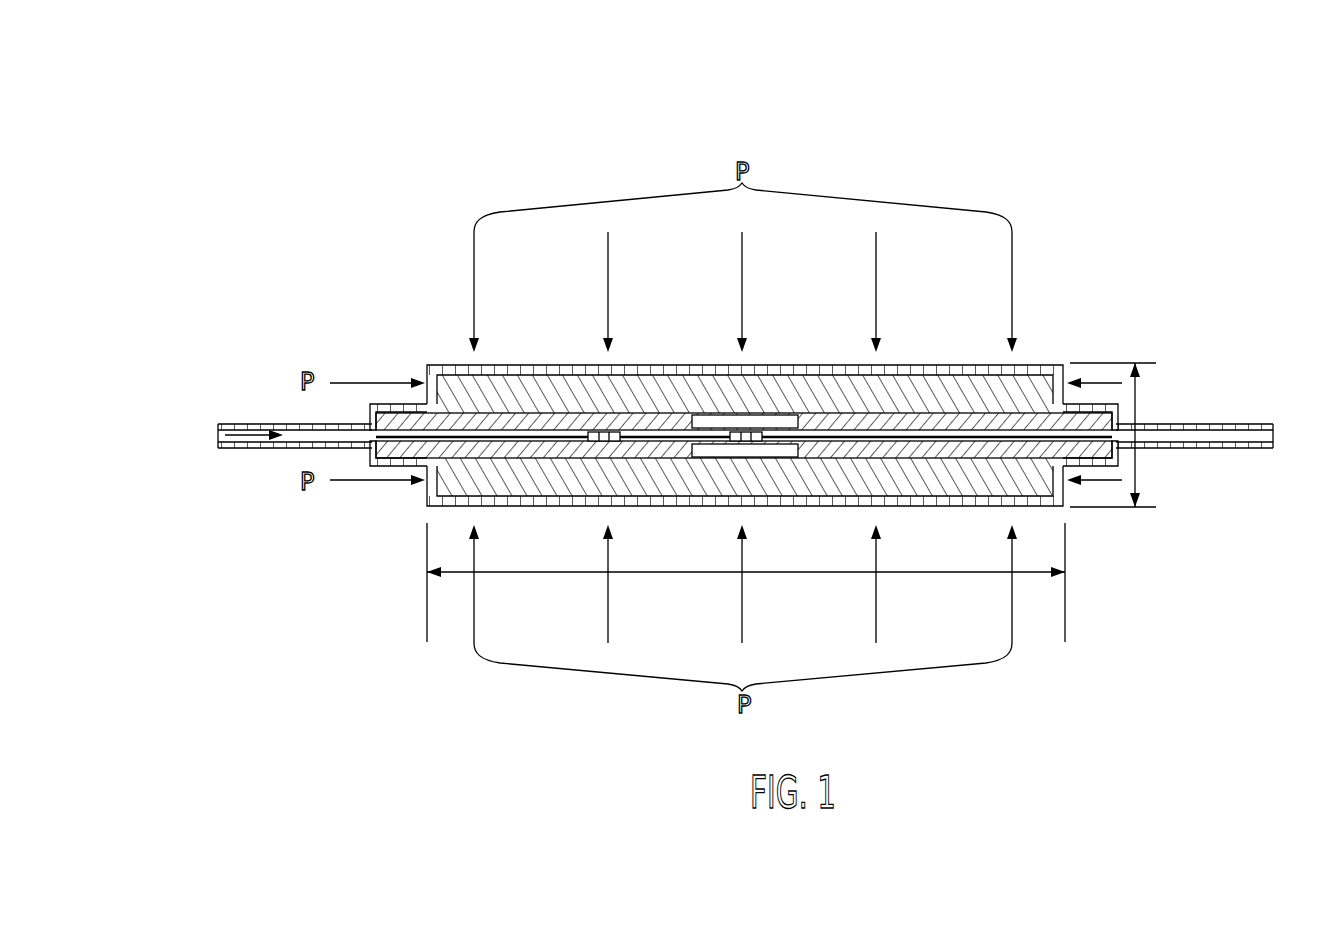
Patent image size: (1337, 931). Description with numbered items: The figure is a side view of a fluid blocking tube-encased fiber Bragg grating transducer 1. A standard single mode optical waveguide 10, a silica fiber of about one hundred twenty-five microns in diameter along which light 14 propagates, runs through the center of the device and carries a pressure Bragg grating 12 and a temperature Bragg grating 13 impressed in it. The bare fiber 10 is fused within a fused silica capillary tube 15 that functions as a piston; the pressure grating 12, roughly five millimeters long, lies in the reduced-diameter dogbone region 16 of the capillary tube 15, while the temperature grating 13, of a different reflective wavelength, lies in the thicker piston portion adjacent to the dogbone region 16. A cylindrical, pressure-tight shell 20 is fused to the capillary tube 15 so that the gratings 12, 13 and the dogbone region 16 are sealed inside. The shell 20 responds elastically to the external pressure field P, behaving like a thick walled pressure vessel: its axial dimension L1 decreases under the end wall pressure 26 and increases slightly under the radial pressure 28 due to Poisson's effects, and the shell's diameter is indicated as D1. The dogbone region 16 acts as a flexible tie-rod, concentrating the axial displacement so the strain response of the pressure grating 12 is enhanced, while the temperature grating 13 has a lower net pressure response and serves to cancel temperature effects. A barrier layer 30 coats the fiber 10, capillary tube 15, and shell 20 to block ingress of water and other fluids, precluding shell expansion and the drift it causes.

The tube-encased fiber Bragg grating transducer 1 is at (296, 136).
The optical waveguide 10 is at (1167, 427).
The pressure Bragg grating 12 is at (752, 428).
The temperature Bragg grating 13 is at (605, 432).
The light 14 is at (235, 424).
The capillary tube 15 is at (917, 420).
The dogbone region 16 is at (740, 452).
The shell 20 is at (510, 388).
The end wall pressure 26 is at (363, 382).
The radial pressure 28 is at (740, 598).
The barrier layer 30 is at (1210, 450).
The diameter dimension D1 is at (1135, 363).
The axial dimensional change L1 is at (777, 573).